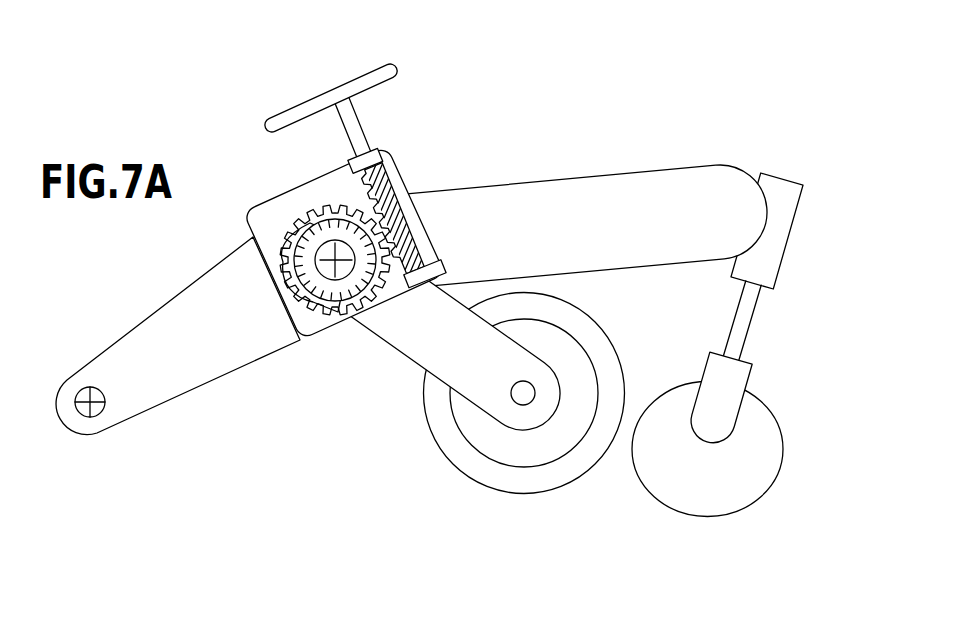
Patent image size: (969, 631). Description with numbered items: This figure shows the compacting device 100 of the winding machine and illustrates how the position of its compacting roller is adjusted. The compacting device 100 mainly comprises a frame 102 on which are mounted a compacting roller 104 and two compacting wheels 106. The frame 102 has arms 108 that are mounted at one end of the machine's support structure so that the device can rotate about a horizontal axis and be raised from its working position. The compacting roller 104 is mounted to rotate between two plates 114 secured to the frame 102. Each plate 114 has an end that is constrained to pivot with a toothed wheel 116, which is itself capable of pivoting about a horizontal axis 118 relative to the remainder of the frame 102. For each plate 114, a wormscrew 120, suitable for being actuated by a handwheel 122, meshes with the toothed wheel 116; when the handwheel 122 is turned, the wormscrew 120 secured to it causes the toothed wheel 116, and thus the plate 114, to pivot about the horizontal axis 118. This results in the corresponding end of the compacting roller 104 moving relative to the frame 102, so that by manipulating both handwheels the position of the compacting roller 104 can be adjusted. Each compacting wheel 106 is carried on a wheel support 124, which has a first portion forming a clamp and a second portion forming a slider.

The compacting device 100 is at (637, 152).
The frame 102 is at (477, 188).
The compacting roller 104 is at (599, 347).
The compacting wheel 106 is at (751, 469).
The arm 108 is at (232, 278).
The plate 114 is at (430, 372).
The toothed wheel 116 is at (370, 306).
The horizontal axis 118 is at (338, 272).
The wormscrew 120 is at (428, 240).
The handwheel 122 is at (386, 67).
The wheel support 124 is at (791, 281).